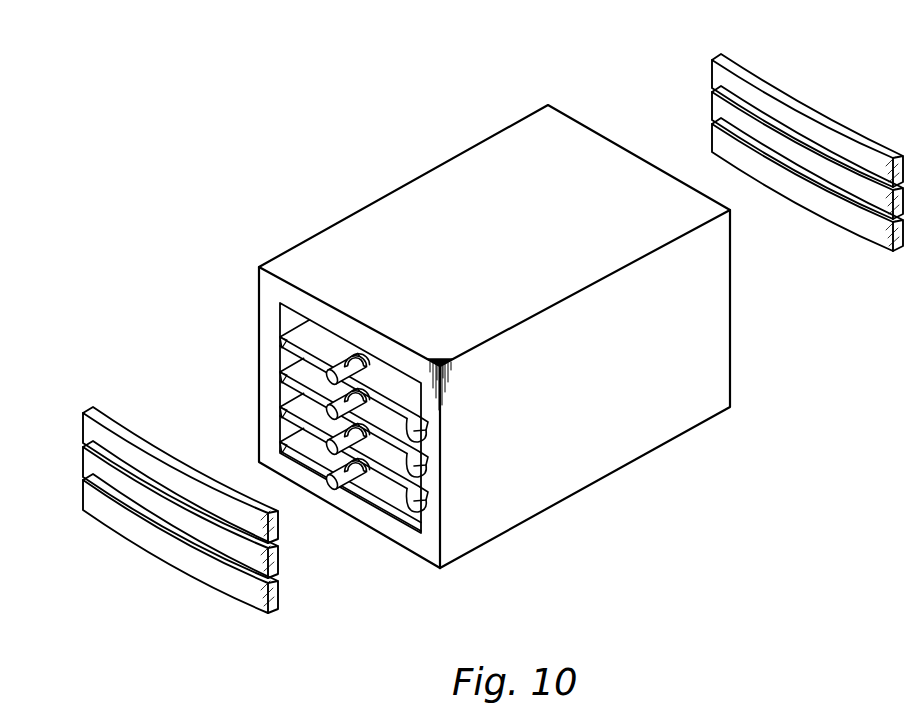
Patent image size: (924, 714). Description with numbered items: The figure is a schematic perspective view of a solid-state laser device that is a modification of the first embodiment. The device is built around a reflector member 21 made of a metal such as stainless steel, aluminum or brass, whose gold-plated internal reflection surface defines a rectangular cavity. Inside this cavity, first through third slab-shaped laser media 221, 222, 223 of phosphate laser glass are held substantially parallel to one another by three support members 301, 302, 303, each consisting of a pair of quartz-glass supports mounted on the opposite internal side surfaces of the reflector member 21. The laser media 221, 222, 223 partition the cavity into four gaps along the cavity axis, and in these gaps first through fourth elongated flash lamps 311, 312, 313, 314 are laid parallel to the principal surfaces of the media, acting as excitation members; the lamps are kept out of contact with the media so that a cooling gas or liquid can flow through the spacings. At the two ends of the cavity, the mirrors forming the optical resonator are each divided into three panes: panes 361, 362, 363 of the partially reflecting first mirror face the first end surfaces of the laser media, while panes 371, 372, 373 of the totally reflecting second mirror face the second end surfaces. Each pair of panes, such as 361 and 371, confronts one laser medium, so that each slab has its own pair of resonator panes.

The reflector member 21 is at (617, 459).
The first slab-shaped laser medium 221 is at (424, 437).
The second slab-shaped laser medium 222 is at (421, 473).
The third slab-shaped laser medium 223 is at (421, 513).
The first support member 301 is at (277, 338).
The second support member 302 is at (277, 373).
The third support member 303 is at (277, 408).
The first elongated flash lamp 311 is at (364, 356).
The second elongated flash lamp 312 is at (366, 396).
The third elongated flash lamp 313 is at (350, 450).
The fourth elongated flash lamp 314 is at (353, 479).
The first pane of first mirror 361 is at (95, 413).
The second pane of first mirror 362 is at (85, 452).
The third pane of first mirror 363 is at (88, 498).
The first pane of second mirror 371 is at (712, 62).
The second pane of second mirror 372 is at (712, 96).
The third pane of second mirror 373 is at (712, 130).